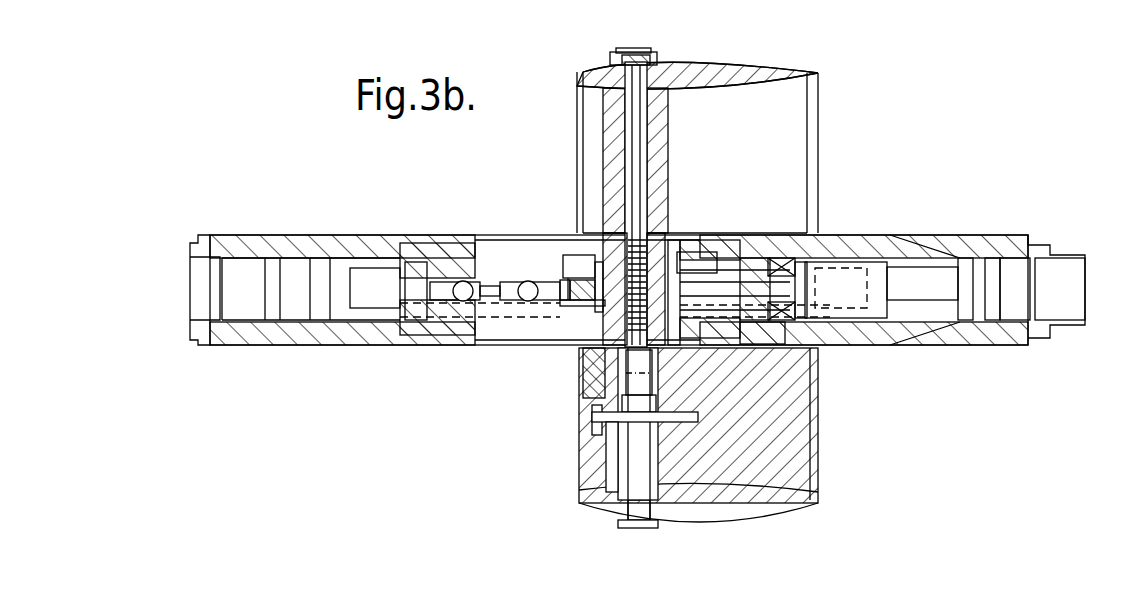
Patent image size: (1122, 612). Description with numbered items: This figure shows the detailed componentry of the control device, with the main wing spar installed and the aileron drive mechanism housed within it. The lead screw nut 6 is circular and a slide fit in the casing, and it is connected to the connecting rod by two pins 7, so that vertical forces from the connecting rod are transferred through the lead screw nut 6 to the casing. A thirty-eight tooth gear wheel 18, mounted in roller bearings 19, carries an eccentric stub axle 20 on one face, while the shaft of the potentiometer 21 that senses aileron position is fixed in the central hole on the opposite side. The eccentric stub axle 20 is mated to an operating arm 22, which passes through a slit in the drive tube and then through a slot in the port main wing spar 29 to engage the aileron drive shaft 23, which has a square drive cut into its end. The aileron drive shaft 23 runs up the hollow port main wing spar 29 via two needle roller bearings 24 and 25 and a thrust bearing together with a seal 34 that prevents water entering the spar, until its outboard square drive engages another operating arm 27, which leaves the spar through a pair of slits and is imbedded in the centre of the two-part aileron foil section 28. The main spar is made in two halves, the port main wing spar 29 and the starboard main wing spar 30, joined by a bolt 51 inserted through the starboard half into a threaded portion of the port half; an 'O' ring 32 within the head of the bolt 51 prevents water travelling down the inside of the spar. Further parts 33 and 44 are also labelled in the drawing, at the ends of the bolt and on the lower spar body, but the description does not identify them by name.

The lead screw nut 6 is at (770, 312).
The pins 7 is at (765, 310).
The gear wheel 18 is at (565, 288).
The roller bearings 19 is at (560, 284).
The eccentric stub axle 20 is at (520, 342).
The potentiometer 21 is at (568, 255).
The operating arm 22 is at (556, 344).
The aileron drive shaft 23 is at (660, 348).
The needle roller bearing 24 is at (612, 386).
The needle roller bearing 25 is at (597, 412).
The operating arm 27 is at (598, 428).
The aileron foil section 28 is at (608, 487).
The port main wing spar 29 is at (657, 460).
The starboard main wing spar 30 is at (620, 162).
The 'O' ring 32 is at (612, 60).
The screw 33 is at (660, 62).
The seal 34 is at (600, 445).
The bottom face 44 is at (737, 500).
The bolt 51 is at (630, 124).